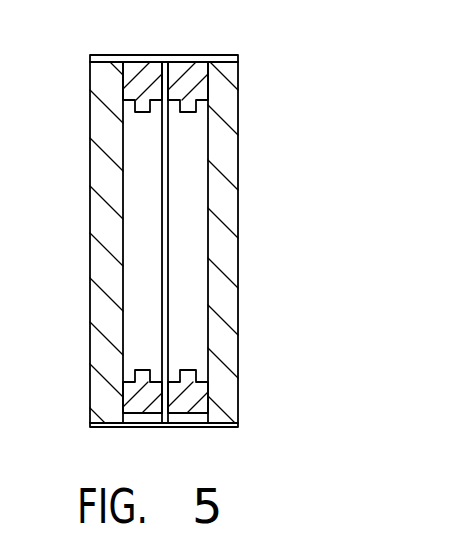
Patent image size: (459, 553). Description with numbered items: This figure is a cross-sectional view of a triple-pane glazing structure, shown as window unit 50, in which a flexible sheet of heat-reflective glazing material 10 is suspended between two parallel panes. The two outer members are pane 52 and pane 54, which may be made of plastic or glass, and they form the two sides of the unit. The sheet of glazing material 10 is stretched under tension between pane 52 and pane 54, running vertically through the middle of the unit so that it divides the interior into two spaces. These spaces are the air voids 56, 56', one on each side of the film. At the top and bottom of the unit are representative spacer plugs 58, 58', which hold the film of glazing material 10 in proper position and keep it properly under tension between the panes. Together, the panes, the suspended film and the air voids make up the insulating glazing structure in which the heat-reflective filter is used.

The window unit 50 is at (257, 272).
The pane 52 is at (100, 322).
The pane 54 is at (228, 320).
The glazing material 10 is at (170, 208).
The air void 56 is at (200, 228).
The air void 56' is at (225, 241).
The spacer plug 58 is at (142, 66).
The spacer plug 58' is at (204, 66).